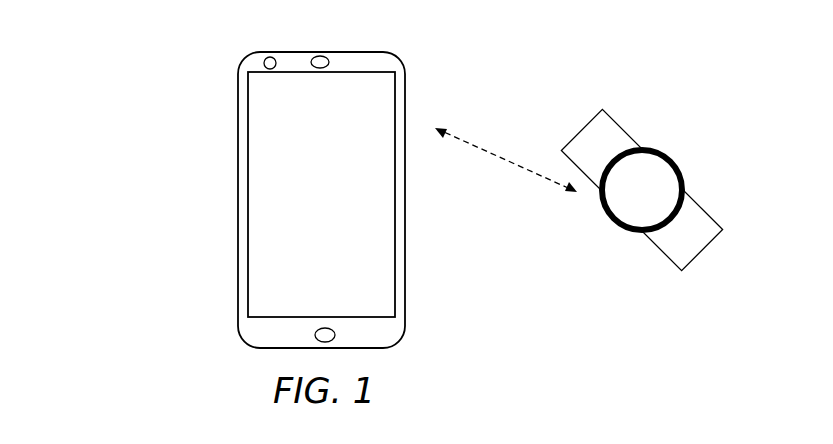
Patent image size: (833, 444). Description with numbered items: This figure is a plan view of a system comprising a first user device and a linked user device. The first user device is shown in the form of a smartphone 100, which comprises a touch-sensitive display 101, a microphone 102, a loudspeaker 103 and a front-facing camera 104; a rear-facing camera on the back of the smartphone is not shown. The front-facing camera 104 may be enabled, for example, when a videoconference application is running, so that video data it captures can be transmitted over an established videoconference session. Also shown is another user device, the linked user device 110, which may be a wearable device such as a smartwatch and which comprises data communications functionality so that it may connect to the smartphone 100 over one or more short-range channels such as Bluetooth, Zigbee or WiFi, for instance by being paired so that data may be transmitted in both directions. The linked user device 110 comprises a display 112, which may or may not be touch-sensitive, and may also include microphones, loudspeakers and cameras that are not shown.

The smartphone 100 is at (230, 165).
The touch-sensitive display 101 is at (343, 174).
The microphone 102 is at (335, 334).
The loudspeaker 103 is at (311, 58).
The front-facing camera 104 is at (262, 66).
The linked user device 110 is at (698, 191).
The display 112 is at (655, 175).